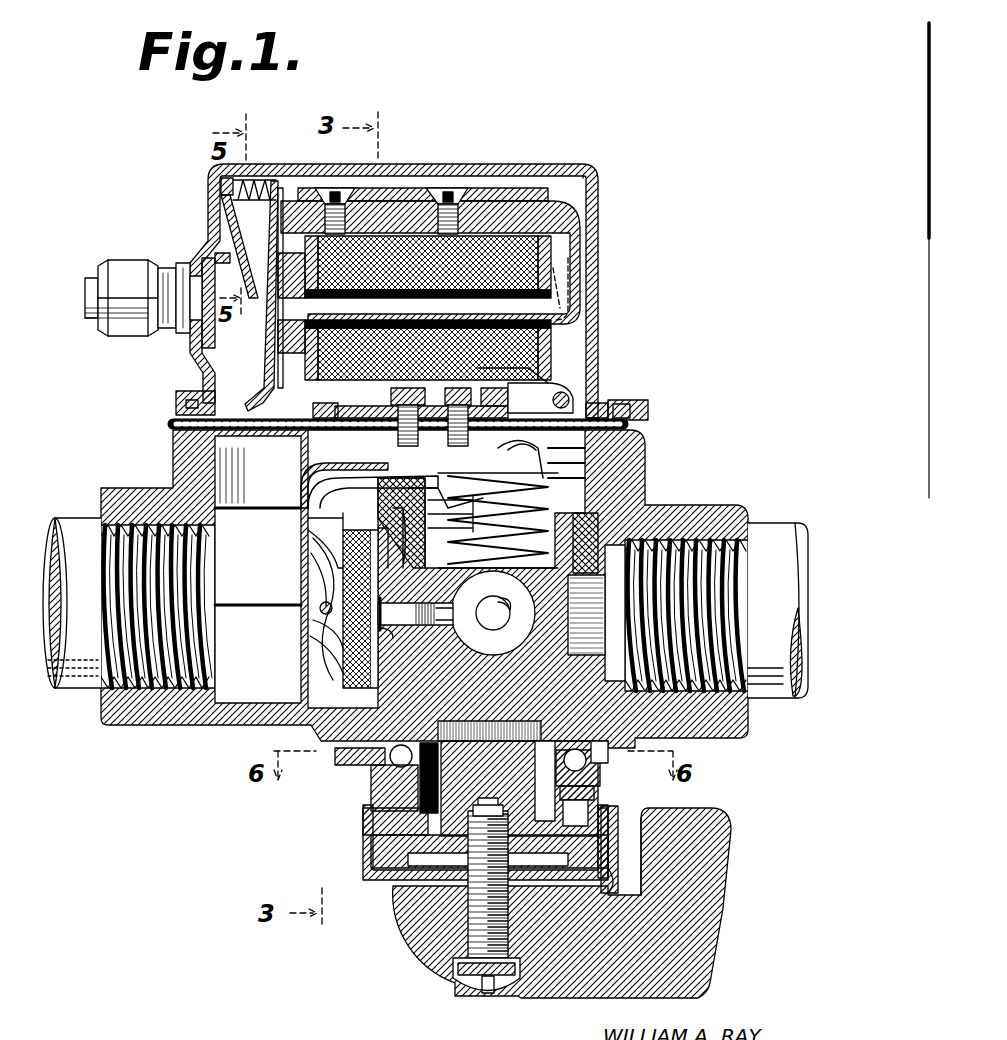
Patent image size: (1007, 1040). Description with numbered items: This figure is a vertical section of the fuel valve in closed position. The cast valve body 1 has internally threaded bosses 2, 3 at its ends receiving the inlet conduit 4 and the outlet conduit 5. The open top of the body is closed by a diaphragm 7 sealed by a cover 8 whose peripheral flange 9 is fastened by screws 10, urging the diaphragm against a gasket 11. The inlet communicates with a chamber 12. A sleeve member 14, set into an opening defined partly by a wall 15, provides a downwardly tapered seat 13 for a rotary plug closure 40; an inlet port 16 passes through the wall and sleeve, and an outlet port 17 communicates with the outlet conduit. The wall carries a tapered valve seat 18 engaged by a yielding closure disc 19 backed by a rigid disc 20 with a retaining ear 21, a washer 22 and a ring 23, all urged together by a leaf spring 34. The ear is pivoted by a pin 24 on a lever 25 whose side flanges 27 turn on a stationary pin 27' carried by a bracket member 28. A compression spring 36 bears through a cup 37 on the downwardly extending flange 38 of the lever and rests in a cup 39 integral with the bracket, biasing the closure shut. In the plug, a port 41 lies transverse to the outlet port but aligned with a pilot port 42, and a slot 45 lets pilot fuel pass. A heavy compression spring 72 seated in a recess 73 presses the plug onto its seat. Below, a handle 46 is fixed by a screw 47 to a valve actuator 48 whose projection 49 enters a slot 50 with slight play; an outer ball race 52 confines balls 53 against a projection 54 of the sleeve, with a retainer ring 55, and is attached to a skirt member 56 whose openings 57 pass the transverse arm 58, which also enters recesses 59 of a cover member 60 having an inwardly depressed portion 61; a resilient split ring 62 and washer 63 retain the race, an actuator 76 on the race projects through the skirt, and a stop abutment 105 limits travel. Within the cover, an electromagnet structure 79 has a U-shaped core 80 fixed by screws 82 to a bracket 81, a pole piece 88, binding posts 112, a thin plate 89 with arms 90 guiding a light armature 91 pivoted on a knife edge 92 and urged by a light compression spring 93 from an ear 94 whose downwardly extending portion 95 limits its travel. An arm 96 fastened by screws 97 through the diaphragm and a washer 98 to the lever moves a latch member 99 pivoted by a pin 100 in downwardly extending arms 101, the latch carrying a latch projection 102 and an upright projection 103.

The valve body 1 is at (631, 450).
The internally threaded boss 2 is at (128, 488).
The internally threaded boss 3 is at (680, 497).
The inlet conduit 4 is at (65, 672).
The outlet conduit 5 is at (762, 532).
The diaphragm 7 is at (220, 408).
The cap or cover 8 is at (592, 272).
The peripheral flange 9 is at (625, 404).
The screws 10 is at (592, 400).
The gasket or packing ring 11 is at (612, 420).
The chamber 12 is at (259, 531).
The downwardly tapered seat 13 is at (552, 510).
The sleeve member 14 is at (392, 505).
The wall 15 is at (370, 512).
The inlet port 16 is at (380, 628).
The outlet port 17 is at (566, 645).
The tapered valve seat 18 is at (348, 516).
The yielding valve closure disc 19 is at (330, 616).
The rigid metal disc 20 is at (328, 634).
The retaining ear 21 is at (318, 590).
The washer 22 is at (322, 548).
The ring 23 is at (322, 512).
The pin 24 is at (312, 596).
The lever 25 is at (310, 462).
The depending side flanges 27 is at (373, 468).
The pin 27' is at (434, 479).
The bracket member 28 is at (555, 392).
The leaf spring 34 is at (310, 563).
The compression spring 36 is at (548, 476).
The cup 37 is at (545, 458).
The downwardly extending flange 38 is at (540, 442).
The cup 39 is at (478, 598).
The rotary plug closure 40 is at (617, 540).
The port 41 is at (478, 620).
The port 42 is at (504, 598).
The sawcut or slot 45 is at (405, 606).
The handle 46 is at (538, 1003).
The screw 47 is at (465, 930).
The valve actuator 48 is at (450, 770).
The projection 49 is at (498, 745).
The slot 50 is at (472, 724).
The outer ball race 52 is at (578, 752).
The balls 53 is at (378, 770).
The projection 54 is at (410, 770).
The retainer ring 55 is at (382, 752).
The hollow cylindrical skirt member 56 is at (600, 780).
The openings 57 is at (600, 820).
The transverse arm 58 is at (362, 868).
The recesses 59 is at (612, 870).
The cover member 60 is at (630, 834).
The inwardly depressed portion 61 is at (463, 880).
The resilient split ring 62 is at (582, 803).
The washer 63 is at (580, 780).
The heavy compression spring 72 is at (420, 492).
The recess 73 is at (455, 608).
The actuator 76 is at (320, 750).
The electromagnet structure 79 is at (578, 195).
The U-shaped core 80 is at (560, 245).
The bracket 81 is at (390, 193).
The screws 82 is at (440, 180).
The pole piece 88 is at (280, 328).
The thin plate 89 is at (497, 180).
The arms 90 is at (215, 196).
The light armature 91 is at (263, 320).
The knife edge 92 is at (275, 190).
The light compression spring 93 is at (250, 172).
The ear 94 is at (206, 185).
The downwardly extending portion 95 is at (207, 245).
The arm 96 is at (385, 388).
The screws 97 is at (445, 385).
The washer 98 is at (500, 392).
The latch member 99 is at (300, 392).
The pin 100 is at (560, 380).
The downwardly extending arms 101 is at (565, 318).
The latch projection 102 is at (262, 424).
The upright projection 103 is at (343, 398).
The stop abutment 105 is at (612, 845).
The binding posts 112 is at (78, 280).